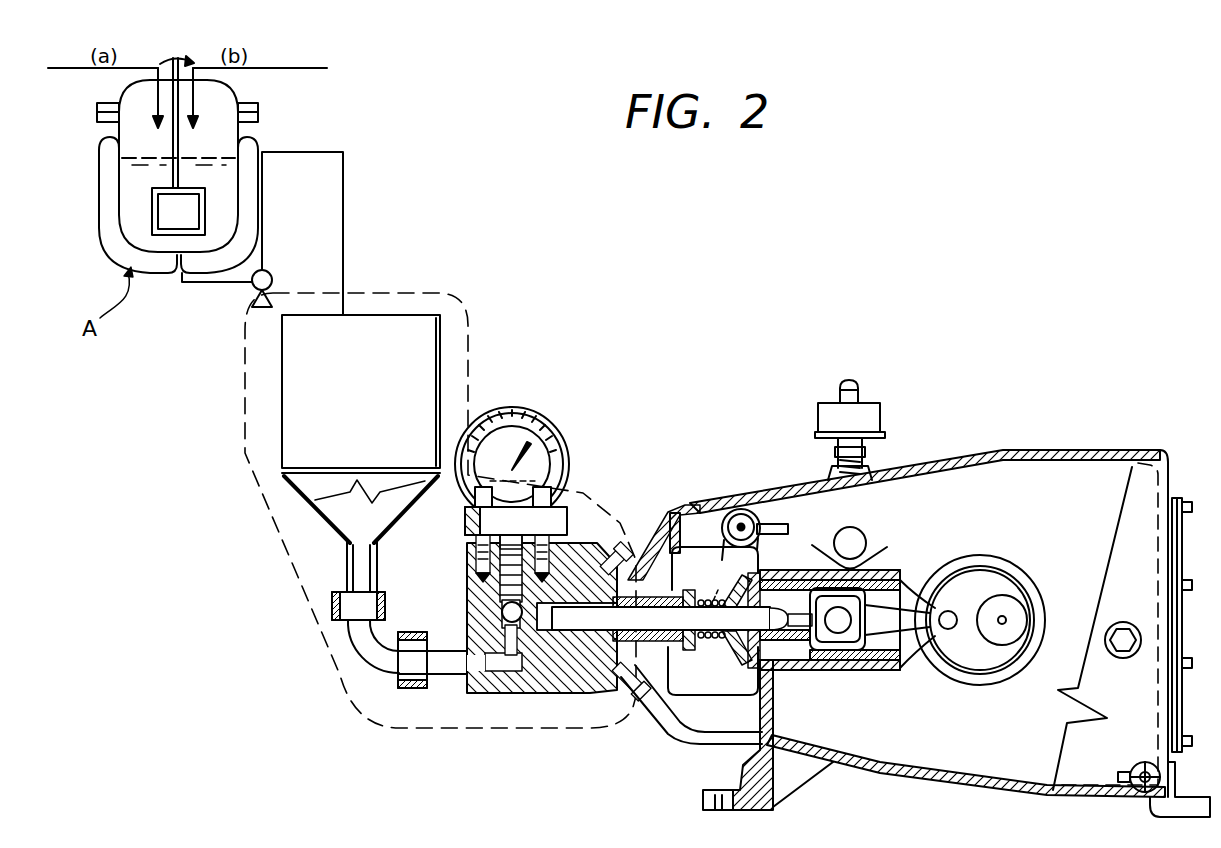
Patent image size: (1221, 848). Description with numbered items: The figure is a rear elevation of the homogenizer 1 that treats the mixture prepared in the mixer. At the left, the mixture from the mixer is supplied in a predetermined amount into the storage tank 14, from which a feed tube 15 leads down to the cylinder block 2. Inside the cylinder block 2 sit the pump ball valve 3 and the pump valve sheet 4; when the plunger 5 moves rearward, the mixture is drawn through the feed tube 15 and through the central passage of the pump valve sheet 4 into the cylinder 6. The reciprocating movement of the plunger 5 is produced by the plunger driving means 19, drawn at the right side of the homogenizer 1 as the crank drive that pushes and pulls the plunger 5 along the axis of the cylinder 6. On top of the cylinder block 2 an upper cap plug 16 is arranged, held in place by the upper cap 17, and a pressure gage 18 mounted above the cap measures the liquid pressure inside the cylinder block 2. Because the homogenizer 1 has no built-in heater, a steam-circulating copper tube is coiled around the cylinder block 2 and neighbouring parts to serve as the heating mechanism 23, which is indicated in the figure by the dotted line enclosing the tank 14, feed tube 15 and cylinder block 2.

The homogenizer 1 is at (994, 402).
The cylinder block 2 is at (510, 685).
The pump ball valve 3 is at (465, 597).
The pump valve sheet 4 is at (467, 628).
The plunger 5 is at (583, 622).
The cylinder 6 is at (545, 622).
The storage tank 14 is at (383, 457).
The feed tube 15 is at (390, 663).
The upper cap plug 16 is at (527, 532).
The upper cap 17 is at (555, 517).
The pressure gage 18 is at (537, 410).
The plunger driving means 19 is at (897, 617).
The heating mechanism 23 is at (336, 688).